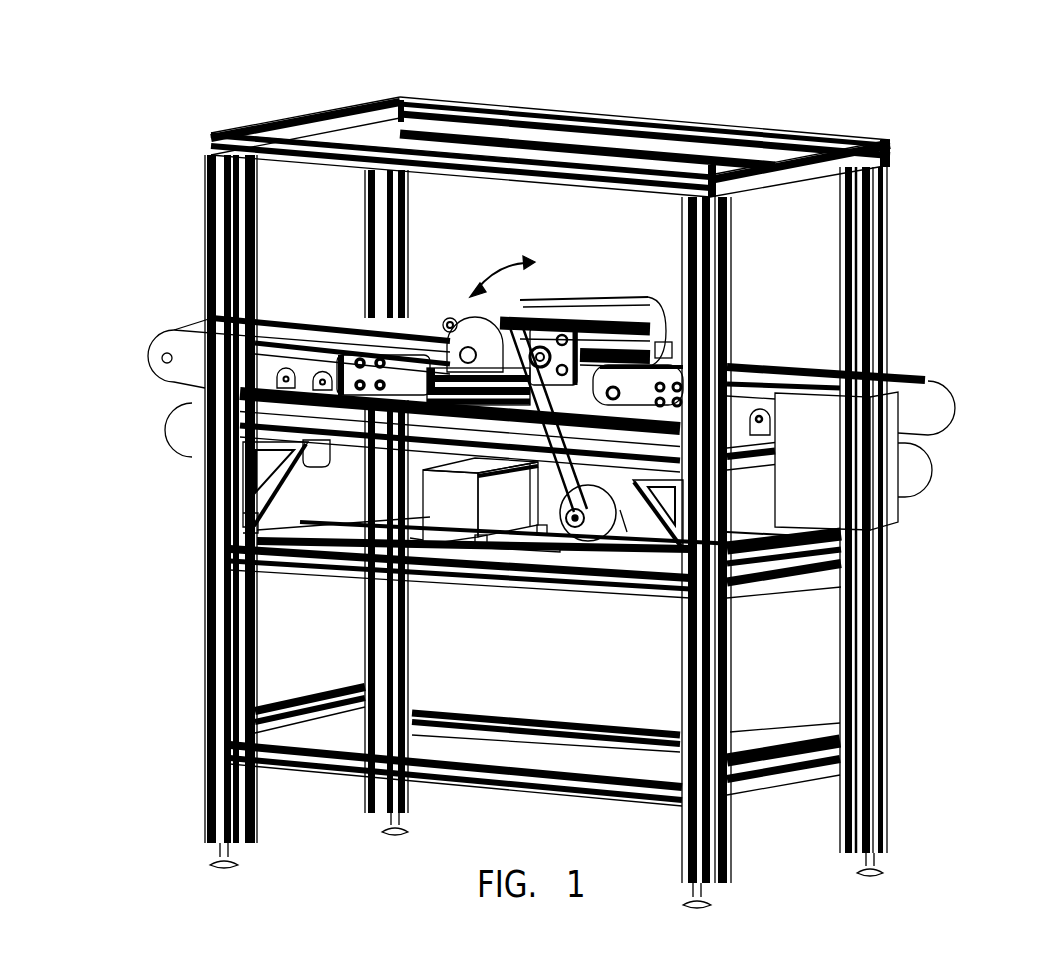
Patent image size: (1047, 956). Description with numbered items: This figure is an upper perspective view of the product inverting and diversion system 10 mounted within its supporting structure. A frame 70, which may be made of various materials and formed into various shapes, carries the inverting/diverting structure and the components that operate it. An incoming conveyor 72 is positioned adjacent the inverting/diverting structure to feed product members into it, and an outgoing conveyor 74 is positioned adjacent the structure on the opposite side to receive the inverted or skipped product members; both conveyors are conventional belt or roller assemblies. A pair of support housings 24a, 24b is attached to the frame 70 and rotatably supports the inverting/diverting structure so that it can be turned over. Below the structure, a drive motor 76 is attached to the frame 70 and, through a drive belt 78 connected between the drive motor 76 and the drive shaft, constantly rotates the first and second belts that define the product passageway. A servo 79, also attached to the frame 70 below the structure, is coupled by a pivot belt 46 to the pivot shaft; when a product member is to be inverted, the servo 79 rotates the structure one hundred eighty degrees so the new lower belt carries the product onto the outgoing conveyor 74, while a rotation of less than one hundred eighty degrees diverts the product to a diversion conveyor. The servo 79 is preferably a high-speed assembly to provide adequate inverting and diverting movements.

The product inverting and diversion system 10 is at (882, 107).
The frame 70 is at (892, 218).
The incoming conveyor 72 is at (913, 380).
The outgoing conveyor 74 is at (197, 322).
The support housing 24a is at (640, 297).
The support housing 24b is at (455, 318).
The pivot belt 46 is at (615, 297).
The drive motor 76 is at (632, 520).
The drive belt 78 is at (543, 555).
The servo 79 is at (457, 505).